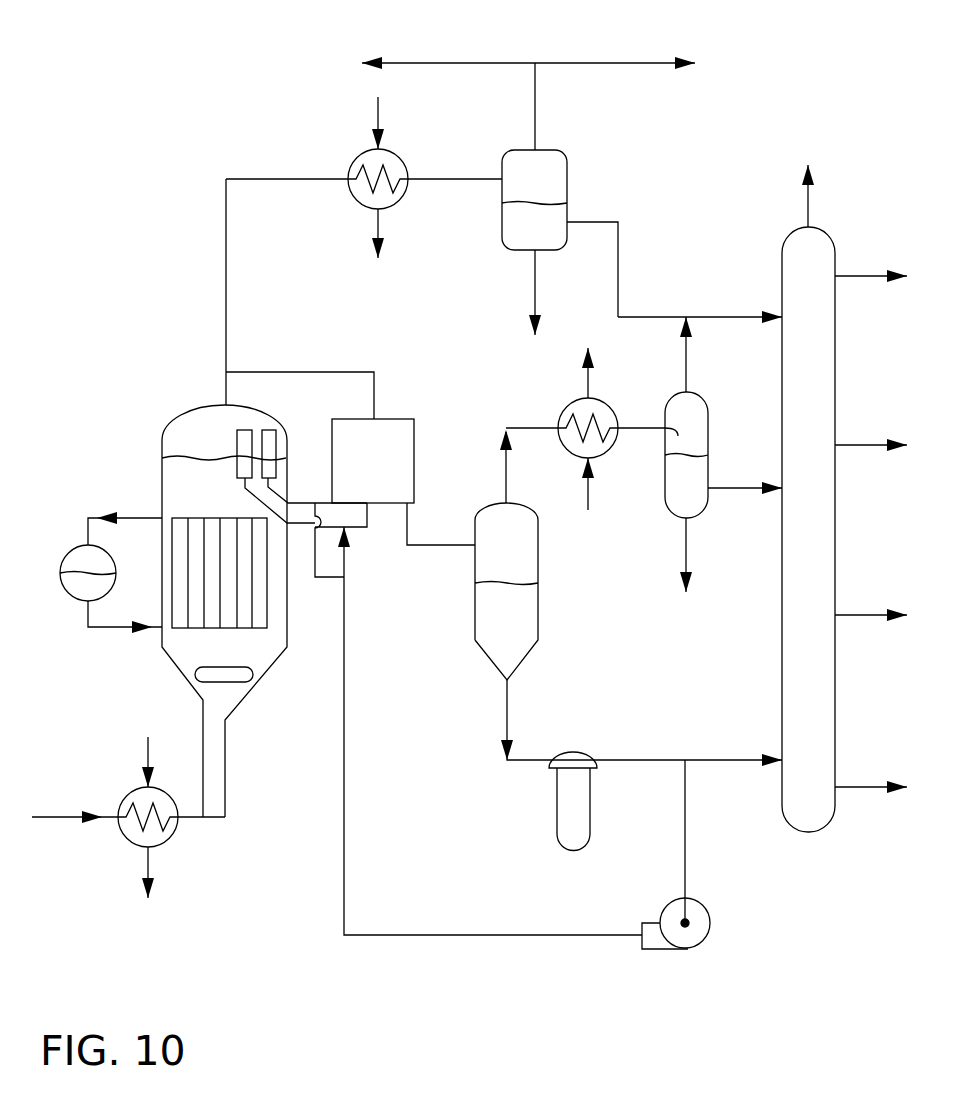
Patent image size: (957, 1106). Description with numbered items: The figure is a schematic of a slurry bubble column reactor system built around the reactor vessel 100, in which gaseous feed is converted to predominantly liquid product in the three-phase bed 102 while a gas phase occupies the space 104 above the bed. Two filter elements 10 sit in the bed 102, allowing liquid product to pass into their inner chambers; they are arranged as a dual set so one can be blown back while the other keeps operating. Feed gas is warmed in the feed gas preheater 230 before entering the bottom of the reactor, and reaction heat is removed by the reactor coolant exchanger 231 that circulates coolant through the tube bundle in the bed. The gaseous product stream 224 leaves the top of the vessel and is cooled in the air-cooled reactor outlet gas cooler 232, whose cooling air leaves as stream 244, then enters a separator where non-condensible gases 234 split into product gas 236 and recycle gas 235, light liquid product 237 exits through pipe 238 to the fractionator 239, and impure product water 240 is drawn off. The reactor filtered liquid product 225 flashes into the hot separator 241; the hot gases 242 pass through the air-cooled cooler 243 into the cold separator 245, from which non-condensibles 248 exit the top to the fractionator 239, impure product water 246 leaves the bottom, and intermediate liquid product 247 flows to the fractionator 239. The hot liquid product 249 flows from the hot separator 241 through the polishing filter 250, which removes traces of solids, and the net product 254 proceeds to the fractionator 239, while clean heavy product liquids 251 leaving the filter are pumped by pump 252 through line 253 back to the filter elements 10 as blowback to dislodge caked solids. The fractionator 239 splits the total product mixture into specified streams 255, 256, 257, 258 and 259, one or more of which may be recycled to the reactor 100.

The reactor vessel 100 is at (148, 468).
The gas space 104 is at (192, 443).
The bed 102 is at (200, 506).
The filter element 10 is at (248, 430).
The reactor coolant exchanger 231 is at (88, 602).
The feed gas preheater 230 is at (170, 840).
The product stream 224 is at (226, 277).
The reactor outlet gas cooler 232 is at (357, 153).
The cooling medium outlet 244 is at (380, 223).
The recycle gas 235 is at (457, 63).
The product gas 236 is at (593, 63).
The non-condensible gases 234 is at (520, 192).
The light liquid product 237 is at (520, 241).
The impure product water 240 is at (533, 277).
The pipe 238 is at (618, 273).
The fractionator 239 is at (782, 297).
The specified stream 259 is at (808, 208).
The specified stream 258 is at (848, 273).
The specified stream 257 is at (847, 442).
The specified stream 256 is at (847, 613).
The specified stream 255 is at (847, 785).
The cooler 243 is at (578, 408).
The cold separator 245 is at (708, 428).
The non-condensibles 248 is at (686, 370).
The impure product water 246 is at (683, 540).
The intermediate liquid product 247 is at (740, 490).
The hot separator 241 is at (538, 613).
The hot gases 242 is at (492, 555).
The hot liquid product 249 is at (492, 636).
The filtered liquid product 225 is at (452, 547).
The polishing filter 250 is at (562, 817).
The net product 254 is at (732, 757).
The clean heavy product liquids 251 is at (685, 832).
The pump 252 is at (707, 938).
The line 253 is at (500, 935).